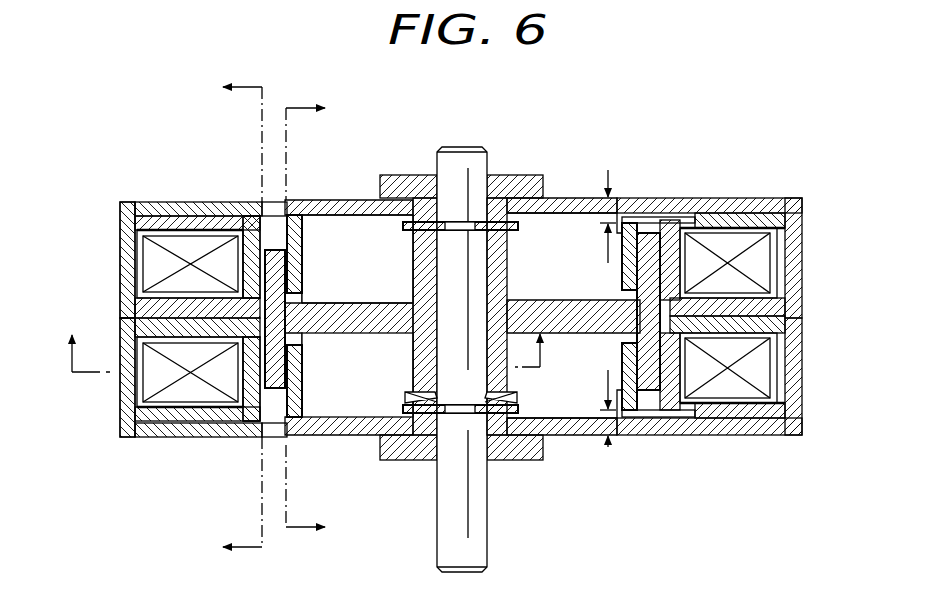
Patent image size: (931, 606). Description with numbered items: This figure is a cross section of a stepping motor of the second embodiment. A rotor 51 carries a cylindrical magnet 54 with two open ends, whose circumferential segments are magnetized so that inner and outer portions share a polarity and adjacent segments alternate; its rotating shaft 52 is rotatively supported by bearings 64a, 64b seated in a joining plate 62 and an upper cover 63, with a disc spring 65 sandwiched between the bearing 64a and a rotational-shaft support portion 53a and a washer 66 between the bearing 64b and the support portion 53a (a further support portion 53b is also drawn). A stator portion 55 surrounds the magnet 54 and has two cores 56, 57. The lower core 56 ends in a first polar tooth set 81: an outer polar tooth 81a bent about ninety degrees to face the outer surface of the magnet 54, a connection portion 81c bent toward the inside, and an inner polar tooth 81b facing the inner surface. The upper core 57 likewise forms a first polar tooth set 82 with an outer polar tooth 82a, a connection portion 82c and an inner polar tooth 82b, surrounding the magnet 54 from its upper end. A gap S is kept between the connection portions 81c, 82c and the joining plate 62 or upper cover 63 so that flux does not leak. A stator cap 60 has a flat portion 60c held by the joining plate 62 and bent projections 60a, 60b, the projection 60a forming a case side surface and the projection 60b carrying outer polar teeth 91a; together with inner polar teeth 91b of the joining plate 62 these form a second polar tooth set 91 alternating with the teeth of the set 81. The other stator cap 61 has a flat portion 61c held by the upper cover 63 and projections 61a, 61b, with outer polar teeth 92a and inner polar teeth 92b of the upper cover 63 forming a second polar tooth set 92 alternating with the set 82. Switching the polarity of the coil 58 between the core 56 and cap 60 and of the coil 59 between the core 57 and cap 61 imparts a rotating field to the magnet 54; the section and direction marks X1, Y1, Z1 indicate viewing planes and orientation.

The rotor 51 is at (557, 230).
The rotating shaft 52 is at (495, 200).
The rotational-shaft support portion 53a is at (415, 222).
The lower inner wall of hub 53b is at (358, 303).
The magnet 54 is at (648, 235).
The stator portion 55 is at (742, 205).
The core 56 is at (792, 330).
The core 57 is at (782, 305).
The coil 58 is at (780, 372).
The coil 59 is at (780, 250).
The stator cap 60 is at (130, 437).
The projection 60a is at (251, 379).
The projection 60b is at (128, 382).
The flat portion 60c is at (158, 437).
The stator cap 61 is at (130, 206).
The projection 61a is at (251, 257).
The projection 61b is at (128, 264).
The flat portion 61c is at (160, 216).
The joining plate 62 is at (354, 435).
The upper cover 63 is at (284, 250).
The bearing 64a is at (410, 450).
The bearing 64b is at (414, 185).
The disc spring 65 is at (403, 396).
The washer 66 is at (422, 222).
The first polar tooth set 81 is at (672, 437).
The outer polar tooth 81a is at (711, 437).
The inner polar tooth 81b is at (625, 360).
The connection portion 81c is at (630, 437).
The first polar tooth set 82 is at (670, 222).
The outer polar tooth 82a is at (700, 220).
The inner polar tooth 82b is at (622, 272).
The connection portion 82c is at (630, 225).
The second polar tooth set 91 is at (308, 395).
The outer polar tooth 91a is at (242, 440).
The inner polar tooth 91b is at (303, 355).
The second polar tooth set 92 is at (305, 241).
The outer polar tooth 92a is at (214, 208).
The inner polar tooth 92b is at (302, 267).
The gap S is at (601, 308).
The section line X1 is at (218, 318).
The section line Y1 is at (325, 316).
The direction Z1 is at (312, 350).